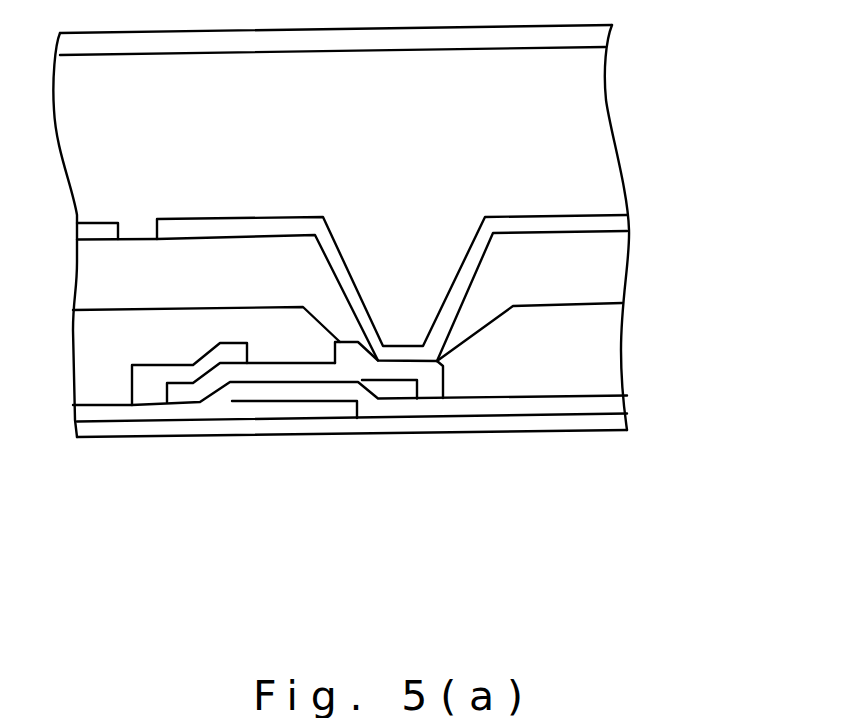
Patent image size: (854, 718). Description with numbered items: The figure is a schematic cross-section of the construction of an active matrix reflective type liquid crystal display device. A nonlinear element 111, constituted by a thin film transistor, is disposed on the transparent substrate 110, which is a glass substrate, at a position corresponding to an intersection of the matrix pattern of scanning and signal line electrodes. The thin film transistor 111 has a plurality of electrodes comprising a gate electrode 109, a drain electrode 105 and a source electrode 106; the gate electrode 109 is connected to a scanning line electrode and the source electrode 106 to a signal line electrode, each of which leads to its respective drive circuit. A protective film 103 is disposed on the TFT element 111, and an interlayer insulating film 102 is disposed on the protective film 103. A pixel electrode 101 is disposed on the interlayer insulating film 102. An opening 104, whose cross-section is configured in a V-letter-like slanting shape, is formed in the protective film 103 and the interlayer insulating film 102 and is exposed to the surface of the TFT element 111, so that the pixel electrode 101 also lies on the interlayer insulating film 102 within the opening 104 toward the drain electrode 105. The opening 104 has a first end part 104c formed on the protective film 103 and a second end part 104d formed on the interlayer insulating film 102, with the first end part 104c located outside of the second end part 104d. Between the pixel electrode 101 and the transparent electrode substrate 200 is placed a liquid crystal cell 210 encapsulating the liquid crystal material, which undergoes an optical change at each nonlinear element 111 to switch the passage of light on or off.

The transparent electrode substrate 200 is at (592, 40).
The liquid crystal cell 210 is at (595, 132).
The opening 104 is at (407, 268).
The pixel electrode 101 is at (597, 223).
The interlayer insulating film 102 is at (598, 270).
The protective film 103 is at (598, 347).
The transparent substrate 110 is at (598, 425).
The source electrode 106 is at (148, 390).
The gate electrode 109 is at (287, 410).
The drain electrode 105 is at (427, 388).
The first end part 104c is at (437, 361).
The second end part 104d is at (443, 364).
The nonlinear element 111 is at (443, 552).